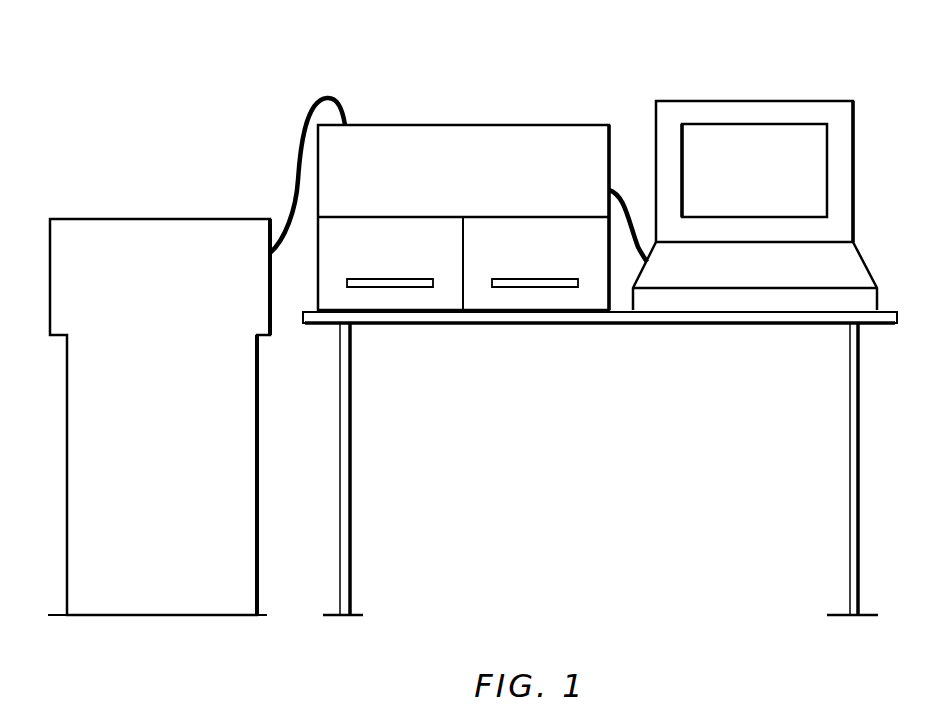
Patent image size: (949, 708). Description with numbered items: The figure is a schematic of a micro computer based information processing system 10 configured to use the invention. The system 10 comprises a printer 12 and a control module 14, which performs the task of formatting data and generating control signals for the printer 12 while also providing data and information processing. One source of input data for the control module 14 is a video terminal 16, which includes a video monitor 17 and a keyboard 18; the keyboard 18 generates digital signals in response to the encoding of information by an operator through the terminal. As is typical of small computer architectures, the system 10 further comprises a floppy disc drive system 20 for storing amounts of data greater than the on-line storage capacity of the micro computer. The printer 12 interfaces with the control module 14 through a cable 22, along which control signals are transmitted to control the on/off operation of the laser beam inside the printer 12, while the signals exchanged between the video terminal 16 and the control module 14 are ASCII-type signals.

The information processing system 10 is at (657, 572).
The printer 12 is at (228, 593).
The control module 14 is at (500, 125).
The video terminal 16 is at (753, 86).
The video monitor 17 is at (795, 140).
The keyboard 18 is at (870, 265).
The floppy disc drive system 20 is at (488, 300).
The cable 22 is at (297, 175).